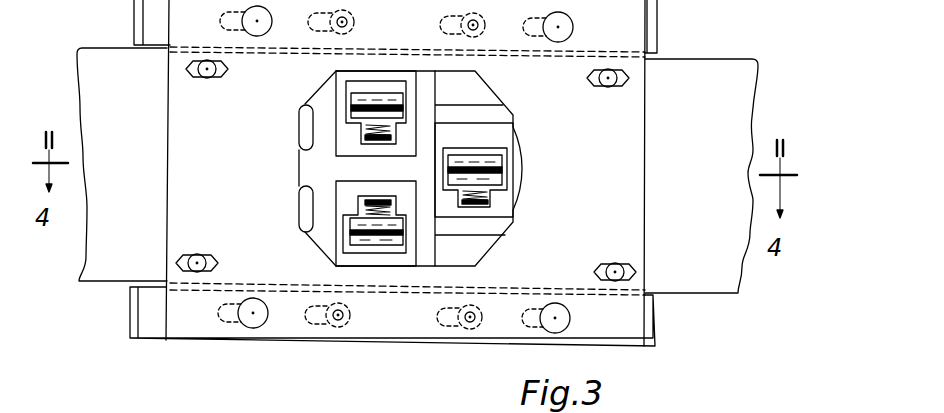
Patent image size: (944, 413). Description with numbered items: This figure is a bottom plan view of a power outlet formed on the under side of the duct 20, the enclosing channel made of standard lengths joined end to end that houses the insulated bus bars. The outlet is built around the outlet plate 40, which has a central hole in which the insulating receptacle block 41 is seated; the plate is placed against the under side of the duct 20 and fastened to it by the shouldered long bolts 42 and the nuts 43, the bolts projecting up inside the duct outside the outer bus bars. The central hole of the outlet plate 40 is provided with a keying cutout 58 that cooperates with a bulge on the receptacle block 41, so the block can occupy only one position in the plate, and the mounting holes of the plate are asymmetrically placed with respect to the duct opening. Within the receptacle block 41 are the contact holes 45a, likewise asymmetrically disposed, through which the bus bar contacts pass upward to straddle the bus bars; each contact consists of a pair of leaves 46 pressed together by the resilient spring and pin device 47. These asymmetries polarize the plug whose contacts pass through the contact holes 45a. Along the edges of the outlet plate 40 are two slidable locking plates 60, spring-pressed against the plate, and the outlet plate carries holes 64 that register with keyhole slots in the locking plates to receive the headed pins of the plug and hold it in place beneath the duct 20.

The duct 20 is at (417, 170).
The outlet plate 40 is at (405, 173).
The insulating receptacle block 41 is at (503, 228).
The shouldered long bolt 42 is at (608, 87).
The nut 43 is at (613, 262).
The contact hole 45a is at (349, 102).
The contact leaf 46 is at (355, 238).
The resilient spring and pin device 47 is at (362, 130).
The keying cutout 58 is at (517, 162).
The slidable locking plate 60 is at (657, 322).
The hole 64 is at (570, 325).